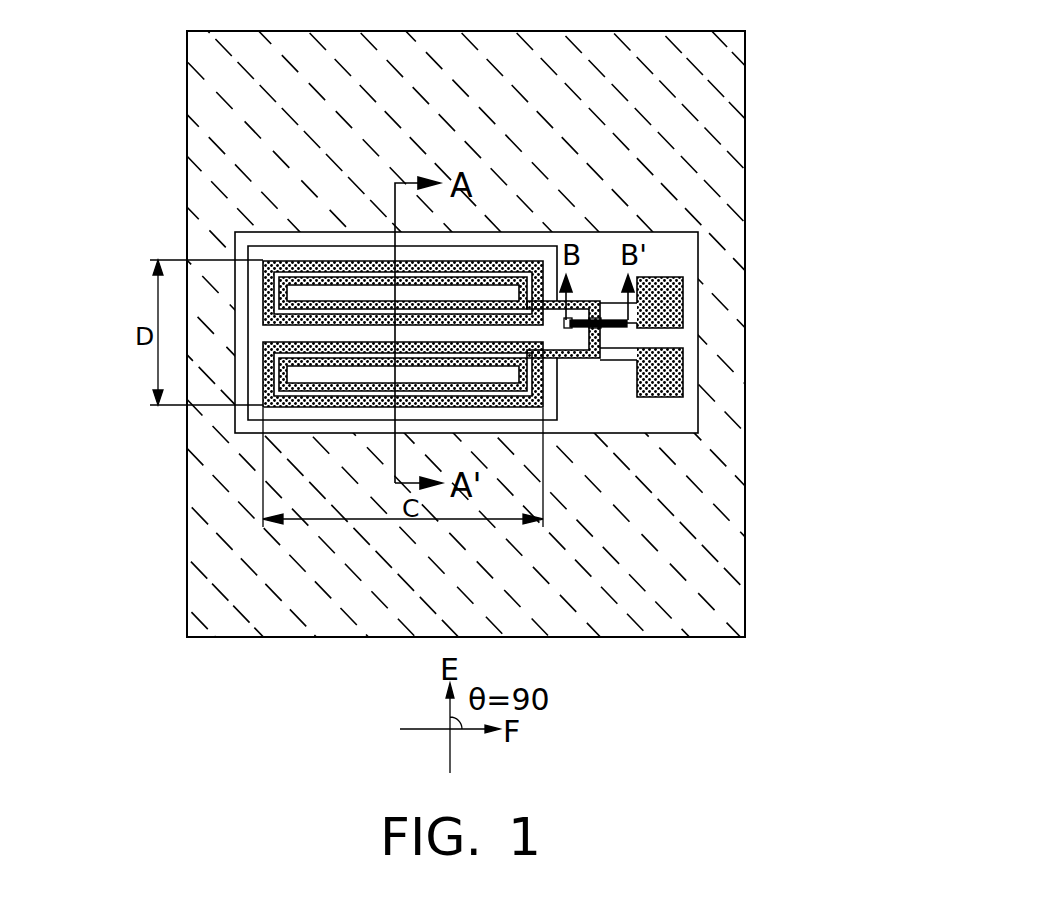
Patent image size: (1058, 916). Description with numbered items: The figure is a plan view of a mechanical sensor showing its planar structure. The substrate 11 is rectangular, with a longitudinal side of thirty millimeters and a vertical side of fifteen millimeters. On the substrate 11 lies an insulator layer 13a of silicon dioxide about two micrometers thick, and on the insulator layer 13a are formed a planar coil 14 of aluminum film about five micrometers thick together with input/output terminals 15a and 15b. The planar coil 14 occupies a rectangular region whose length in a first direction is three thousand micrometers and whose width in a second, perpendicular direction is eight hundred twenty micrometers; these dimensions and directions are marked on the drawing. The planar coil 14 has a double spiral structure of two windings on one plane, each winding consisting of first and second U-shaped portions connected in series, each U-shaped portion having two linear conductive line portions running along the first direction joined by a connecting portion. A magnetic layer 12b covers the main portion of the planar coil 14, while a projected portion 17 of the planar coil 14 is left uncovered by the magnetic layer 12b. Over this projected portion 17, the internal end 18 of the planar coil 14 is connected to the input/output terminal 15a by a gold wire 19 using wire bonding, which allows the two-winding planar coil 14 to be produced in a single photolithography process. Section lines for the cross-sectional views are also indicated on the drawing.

The substrate 11 is at (208, 69).
The magnetic layer 12b is at (548, 253).
The insulator layer 13a is at (685, 250).
The planar coil 14 is at (278, 254).
The input/output terminal 15a is at (667, 302).
The input/output terminal 15b is at (672, 373).
The projected portion 17 is at (578, 325).
The internal end 18 is at (568, 328).
The gold wire 19 is at (590, 325).